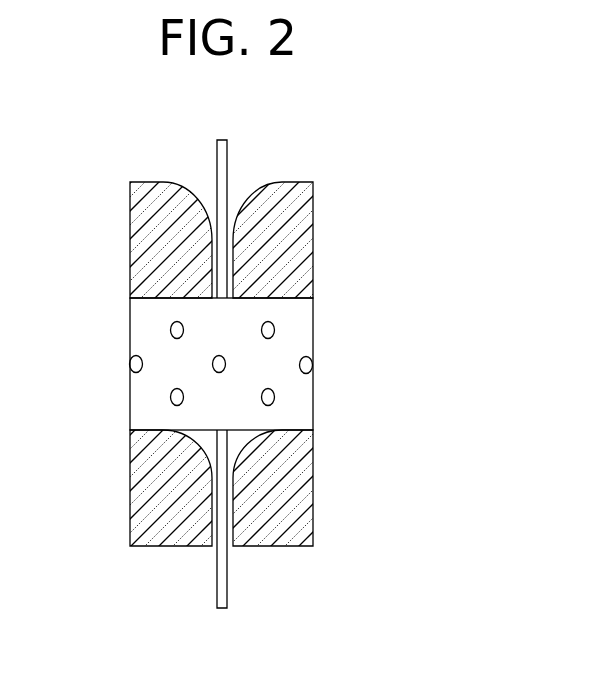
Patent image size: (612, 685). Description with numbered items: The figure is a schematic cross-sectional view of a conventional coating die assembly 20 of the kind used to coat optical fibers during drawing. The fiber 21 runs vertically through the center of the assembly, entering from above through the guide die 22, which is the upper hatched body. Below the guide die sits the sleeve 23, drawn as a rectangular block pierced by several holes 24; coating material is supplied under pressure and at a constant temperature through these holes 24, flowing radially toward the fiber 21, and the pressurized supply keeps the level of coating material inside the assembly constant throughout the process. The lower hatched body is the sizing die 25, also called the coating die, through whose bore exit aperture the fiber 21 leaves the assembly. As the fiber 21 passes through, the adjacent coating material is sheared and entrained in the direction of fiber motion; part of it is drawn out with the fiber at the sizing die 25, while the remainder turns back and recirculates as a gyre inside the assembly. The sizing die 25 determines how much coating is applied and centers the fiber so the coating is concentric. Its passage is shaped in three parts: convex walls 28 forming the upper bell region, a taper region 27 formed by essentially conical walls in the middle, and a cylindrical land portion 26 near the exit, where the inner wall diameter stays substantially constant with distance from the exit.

The coating die assembly 20 is at (313, 152).
The fiber 21 is at (227, 150).
The guide die 22 is at (313, 251).
The sleeve 23 is at (313, 325).
The holes 24 is at (275, 397).
The sizing die 25 is at (306, 382).
The cylindrical land portion 26 is at (233, 530).
The taper region 27 is at (209, 478).
The convex walls 28 is at (306, 382).